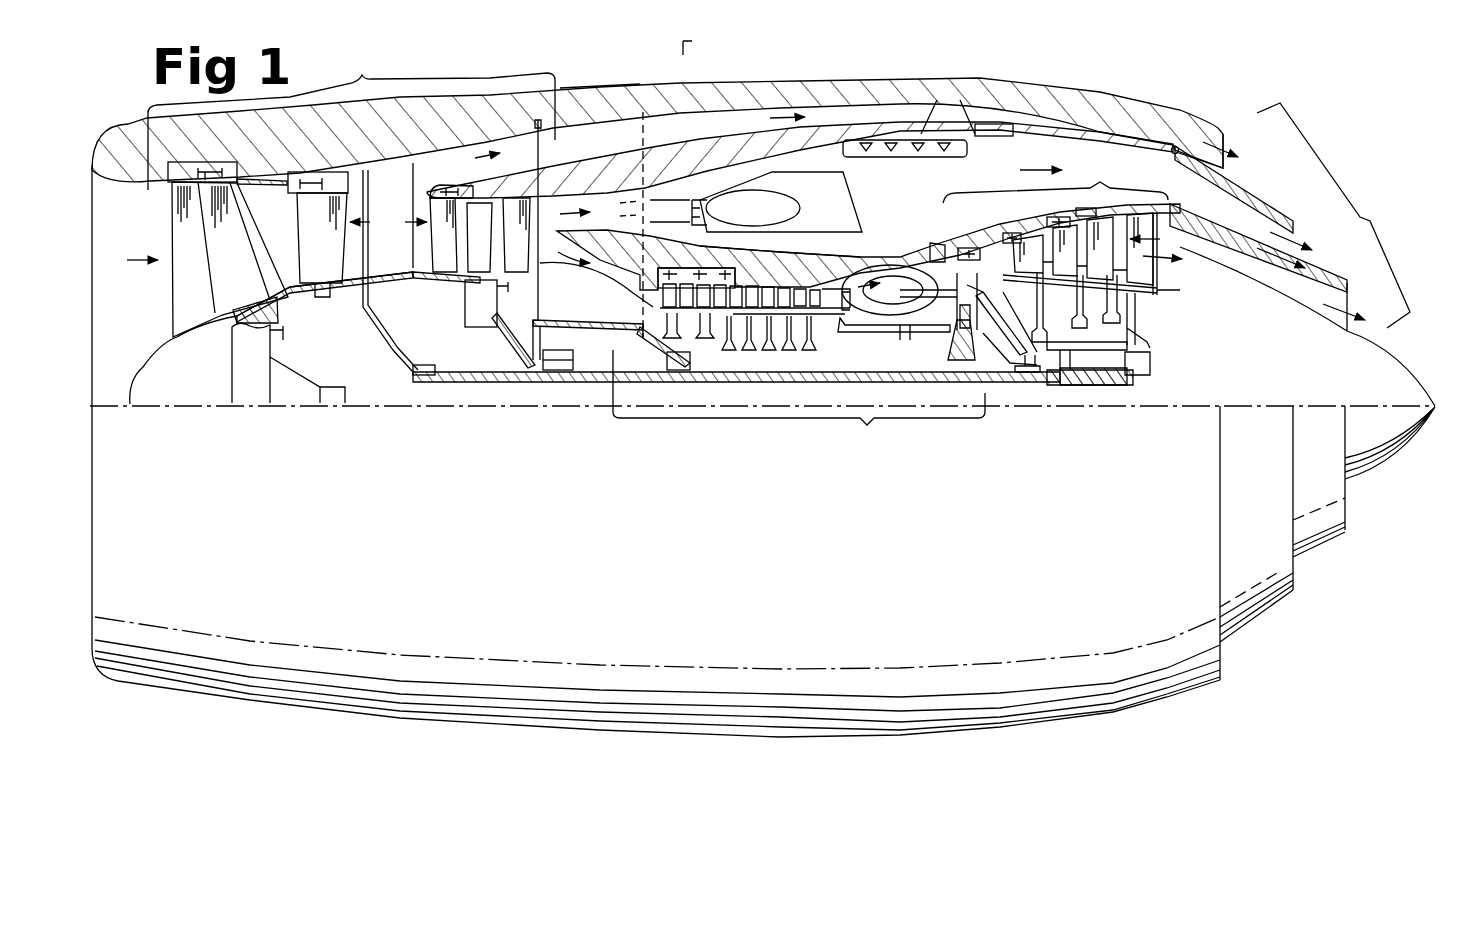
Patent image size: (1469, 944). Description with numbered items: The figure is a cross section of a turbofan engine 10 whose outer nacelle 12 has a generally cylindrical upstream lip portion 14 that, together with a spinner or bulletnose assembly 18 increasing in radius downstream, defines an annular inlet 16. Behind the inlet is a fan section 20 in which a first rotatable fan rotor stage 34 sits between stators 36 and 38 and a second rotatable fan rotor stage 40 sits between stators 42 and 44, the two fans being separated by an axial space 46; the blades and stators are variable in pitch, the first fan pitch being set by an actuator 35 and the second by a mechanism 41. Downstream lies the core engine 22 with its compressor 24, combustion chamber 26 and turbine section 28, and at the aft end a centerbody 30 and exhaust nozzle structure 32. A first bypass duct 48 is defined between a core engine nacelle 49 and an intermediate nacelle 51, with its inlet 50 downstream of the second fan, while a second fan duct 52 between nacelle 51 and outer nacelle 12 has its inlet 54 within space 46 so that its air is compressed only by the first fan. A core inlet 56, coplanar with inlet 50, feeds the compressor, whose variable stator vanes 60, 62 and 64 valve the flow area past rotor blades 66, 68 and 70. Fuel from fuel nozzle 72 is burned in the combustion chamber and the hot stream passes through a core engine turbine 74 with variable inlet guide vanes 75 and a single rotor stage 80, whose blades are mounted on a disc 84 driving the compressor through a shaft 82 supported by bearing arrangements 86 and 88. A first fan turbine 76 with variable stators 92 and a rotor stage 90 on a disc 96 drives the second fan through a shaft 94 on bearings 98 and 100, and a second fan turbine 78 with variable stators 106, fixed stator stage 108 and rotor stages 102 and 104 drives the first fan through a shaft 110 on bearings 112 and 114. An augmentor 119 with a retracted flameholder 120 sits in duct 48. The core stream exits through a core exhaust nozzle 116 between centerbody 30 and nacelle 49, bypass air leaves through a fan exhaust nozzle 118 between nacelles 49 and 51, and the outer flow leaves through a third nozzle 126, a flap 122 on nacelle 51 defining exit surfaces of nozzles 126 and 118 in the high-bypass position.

The turbofan engine 10 is at (700, 45).
The outer nacelle 12 is at (596, 88).
The upstream lip portion 14 is at (93, 141).
The inlet 16 is at (139, 246).
The spinner or bulletnose assembly 18 is at (143, 366).
The fan section 20 is at (351, 121).
The core engine 22 is at (799, 402).
The compressor 24 is at (776, 283).
The combustion chamber 26 is at (906, 306).
The turbine section 28 is at (1055, 183).
The centerbody 30 is at (1390, 364).
The exhaust nozzle structure 32 is at (1333, 215).
The first rotatable fan rotor stage 34 is at (230, 259).
The actuator 35 is at (233, 376).
The stator 36 is at (210, 218).
The stator 38 is at (318, 234).
The second rotatable fan rotor stage 40 is at (479, 237).
The pitch control mechanism 41 is at (462, 313).
The stator 42 is at (451, 228).
The stator 44 is at (516, 235).
The axial space 46 is at (388, 222).
The first bypass duct 48 is at (975, 189).
The core engine nacelle 49 is at (1216, 240).
The inlet of first bypass duct 50 is at (582, 220).
The intermediate nacelle 51 is at (1130, 134).
The second fan duct 52 is at (746, 126).
The inlet of second fan duct 54 is at (473, 163).
The core engine inlet 56 is at (578, 242).
The variable stator vane 60 is at (652, 292).
The variable stator vane 62 is at (693, 278).
The variable stator vane 64 is at (740, 278).
The compressor rotor blade 66 is at (679, 308).
The compressor rotor blade 68 is at (712, 278).
The compressor rotor blade 70 is at (733, 342).
The fuel nozzle 72 is at (890, 304).
The core engine turbine 74 is at (964, 249).
The variable pitch inlet guide vanes 75 is at (928, 250).
The first fan turbine 76 is at (1011, 230).
The second fan turbine 78 is at (1159, 254).
The rotor stage 80 is at (976, 291).
The shaft 82 is at (907, 332).
The disc 84 is at (953, 350).
The bearing arrangement 86 is at (667, 358).
The bearing arrangement 88 is at (1025, 357).
The rotor blade stage 90 is at (1037, 265).
The variable pitch inlet guide vane stator stage 92 is at (1006, 232).
The shaft 94 is at (853, 366).
The disc 96 is at (1047, 300).
The bearing 98 is at (560, 357).
The bearing 100 is at (1052, 345).
The turbine rotor stage 102 is at (1078, 289).
The turbine rotor stage 104 is at (1117, 263).
The variable pitch inlet guide vane stator stage 106 is at (1060, 217).
The fixed stator stage 108 is at (1084, 212).
The shaft 110 is at (718, 387).
The bearing 112 is at (435, 369).
The bearing 114 is at (1120, 360).
The core exhaust nozzle 116 is at (1330, 297).
The fan exhaust nozzle 118 is at (1293, 227).
The augmentor 119 is at (777, 202).
The retractable flameholder 120 is at (898, 160).
The flap 122 is at (1252, 192).
The third exhaust nozzle 126 is at (1225, 150).